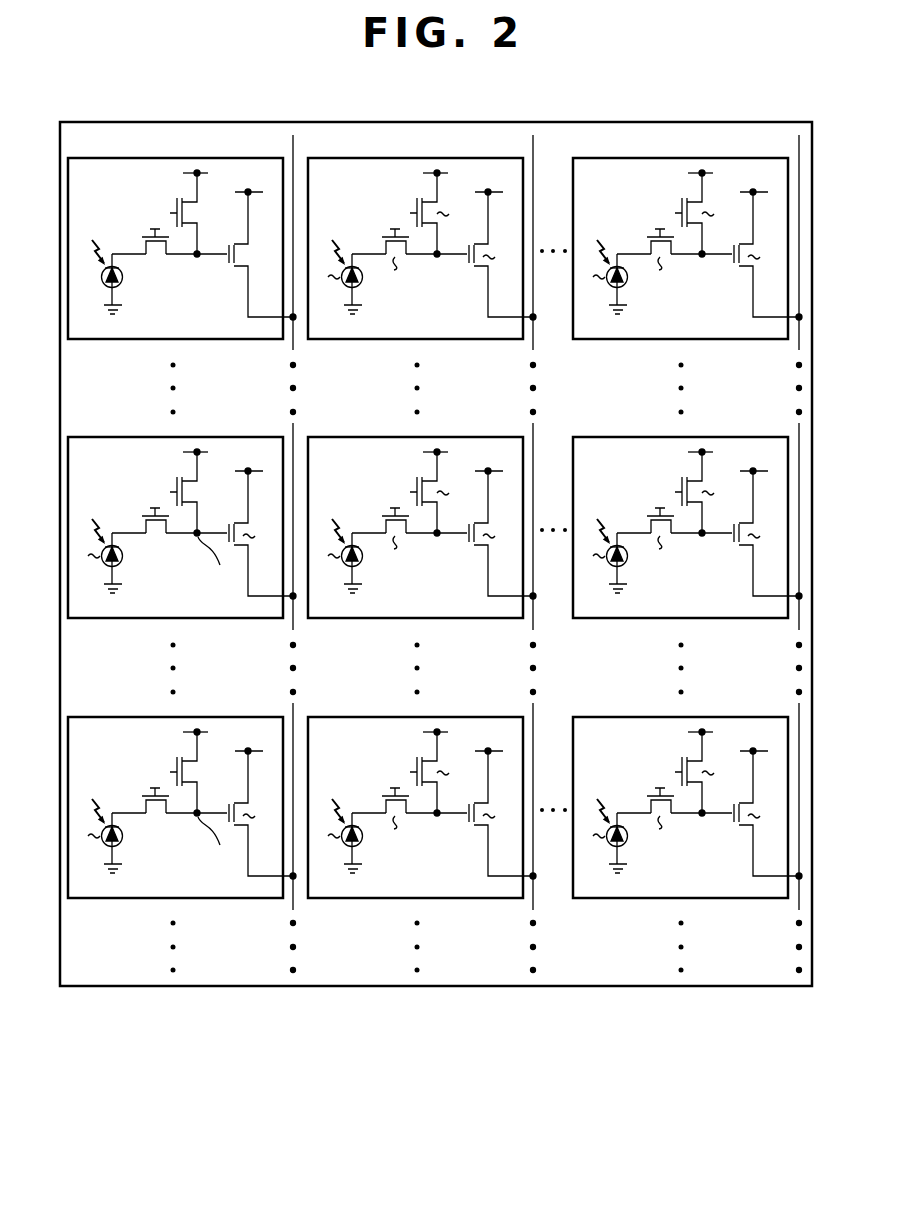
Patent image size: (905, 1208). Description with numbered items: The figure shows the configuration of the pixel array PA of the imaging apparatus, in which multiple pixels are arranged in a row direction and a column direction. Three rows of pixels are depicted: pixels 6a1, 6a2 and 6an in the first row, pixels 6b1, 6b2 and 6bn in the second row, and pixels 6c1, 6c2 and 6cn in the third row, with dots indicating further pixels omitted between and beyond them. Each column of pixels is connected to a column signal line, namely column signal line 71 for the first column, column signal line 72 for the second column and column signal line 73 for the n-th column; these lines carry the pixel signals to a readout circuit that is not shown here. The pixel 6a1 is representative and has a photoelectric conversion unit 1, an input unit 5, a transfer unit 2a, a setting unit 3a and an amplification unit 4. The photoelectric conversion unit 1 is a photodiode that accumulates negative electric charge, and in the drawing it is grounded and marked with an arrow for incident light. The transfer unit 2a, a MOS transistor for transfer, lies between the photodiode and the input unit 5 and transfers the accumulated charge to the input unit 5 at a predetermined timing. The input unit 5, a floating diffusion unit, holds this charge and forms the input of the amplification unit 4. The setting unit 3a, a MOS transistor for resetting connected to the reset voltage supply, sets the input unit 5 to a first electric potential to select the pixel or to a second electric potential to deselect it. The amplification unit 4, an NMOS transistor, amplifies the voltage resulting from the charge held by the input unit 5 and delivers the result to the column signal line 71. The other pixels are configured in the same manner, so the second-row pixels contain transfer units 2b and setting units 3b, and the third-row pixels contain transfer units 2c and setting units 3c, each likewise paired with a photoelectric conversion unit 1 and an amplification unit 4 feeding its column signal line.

The photoelectric conversion unit 1 is at (98, 277).
The transfer unit 2a is at (155, 264).
The transfer unit 2b is at (155, 543).
The transfer unit 2c is at (155, 823).
The setting unit 3a is at (201, 213).
The setting unit 3b is at (201, 492).
The setting unit 3c is at (200, 772).
The amplification unit 4 is at (262, 254).
The input unit 5 is at (212, 278).
The pixel 6a1 is at (182, 212).
The pixel 6a2 is at (361, 160).
The pixel 6an is at (629, 160).
The pixel 6b1 is at (182, 505).
The pixel 6b2 is at (488, 437).
The pixel 6bn is at (755, 437).
The pixel 6c1 is at (182, 785).
The pixel 6c2 is at (488, 717).
The pixel 6cn is at (755, 717).
The column signal line 71 is at (289, 136).
The column signal line 72 is at (529, 136).
The column signal line 73 is at (793, 136).
The pixel array PA is at (97, 1012).